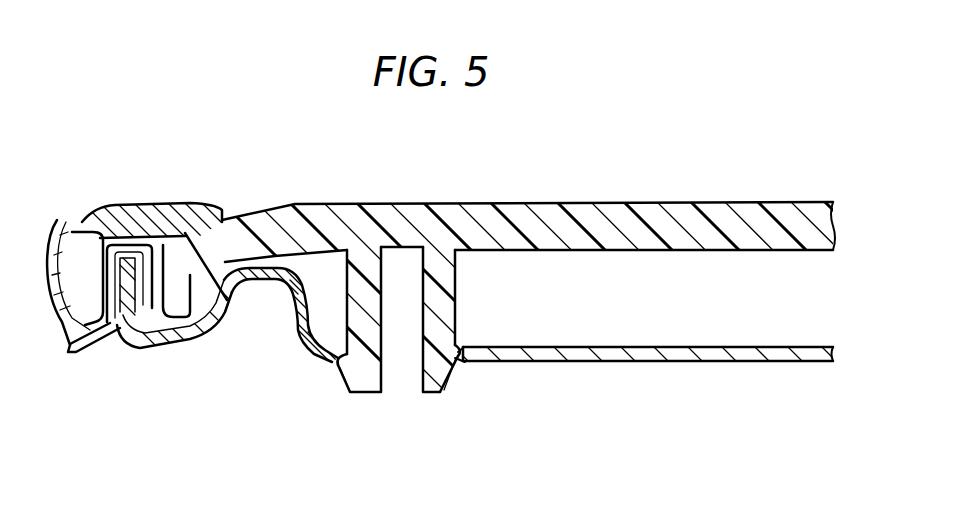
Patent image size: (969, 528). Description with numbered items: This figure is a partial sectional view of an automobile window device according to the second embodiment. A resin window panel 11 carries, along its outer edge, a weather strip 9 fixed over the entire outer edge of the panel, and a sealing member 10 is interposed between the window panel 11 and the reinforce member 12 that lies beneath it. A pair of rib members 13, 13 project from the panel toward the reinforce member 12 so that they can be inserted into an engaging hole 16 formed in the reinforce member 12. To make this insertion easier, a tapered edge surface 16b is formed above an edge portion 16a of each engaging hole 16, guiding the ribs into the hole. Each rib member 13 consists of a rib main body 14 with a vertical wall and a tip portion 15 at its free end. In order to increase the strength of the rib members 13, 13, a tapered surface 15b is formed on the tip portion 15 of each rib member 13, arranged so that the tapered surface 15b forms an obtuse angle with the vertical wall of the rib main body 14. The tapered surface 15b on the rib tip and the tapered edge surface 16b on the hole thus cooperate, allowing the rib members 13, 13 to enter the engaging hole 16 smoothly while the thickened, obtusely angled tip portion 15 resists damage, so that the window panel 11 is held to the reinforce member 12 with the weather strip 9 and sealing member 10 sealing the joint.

The weather strip 9 is at (150, 203).
The sealing member 10 is at (246, 263).
The trim panel 11 is at (470, 202).
The reinforce member 12 is at (595, 362).
The rib member 13 is at (357, 397).
The rib main body 14 is at (345, 312).
The tip portion 15 is at (352, 377).
The tapered surface 15b is at (340, 362).
The engaging hole 16 is at (455, 313).
The edge portion 16a is at (473, 363).
The tapered edge surface 16b is at (460, 343).